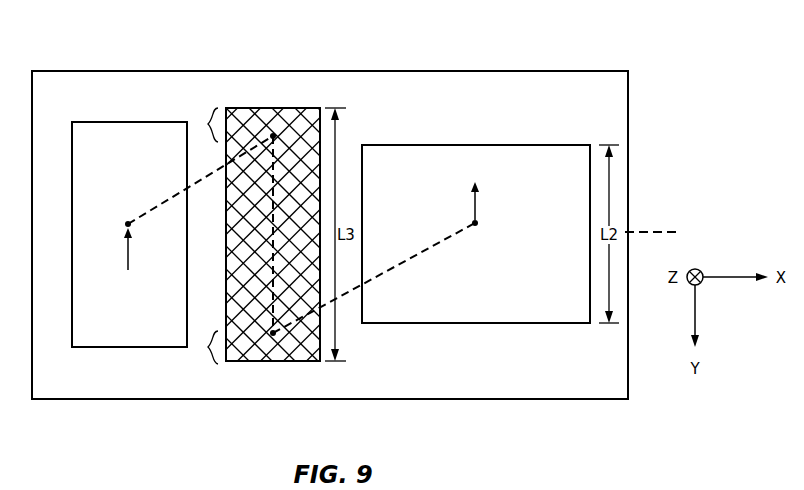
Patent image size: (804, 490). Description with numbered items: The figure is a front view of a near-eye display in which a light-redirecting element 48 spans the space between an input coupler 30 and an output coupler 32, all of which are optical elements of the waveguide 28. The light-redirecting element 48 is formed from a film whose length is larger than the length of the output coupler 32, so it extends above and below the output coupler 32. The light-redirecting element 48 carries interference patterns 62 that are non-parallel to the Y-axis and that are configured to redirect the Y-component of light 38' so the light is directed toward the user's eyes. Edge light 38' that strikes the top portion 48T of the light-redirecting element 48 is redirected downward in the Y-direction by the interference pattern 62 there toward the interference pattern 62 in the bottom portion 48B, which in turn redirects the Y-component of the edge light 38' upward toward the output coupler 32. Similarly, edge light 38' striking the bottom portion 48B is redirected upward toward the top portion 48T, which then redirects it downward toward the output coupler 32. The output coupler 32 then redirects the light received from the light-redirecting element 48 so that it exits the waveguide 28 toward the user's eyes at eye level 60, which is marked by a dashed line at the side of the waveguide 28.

The waveguide 28 is at (550, 84).
The input coupler 30 is at (104, 121).
The output coupler 32 is at (403, 144).
The light-redirecting element 48 is at (274, 107).
The top portion of light-redirecting element 48T is at (208, 124).
The bottom portion of light-redirecting element 48B is at (208, 347).
The interference patterns 62 is at (253, 342).
The edge light 38' is at (311, 234).
The eye level 60 is at (650, 231).